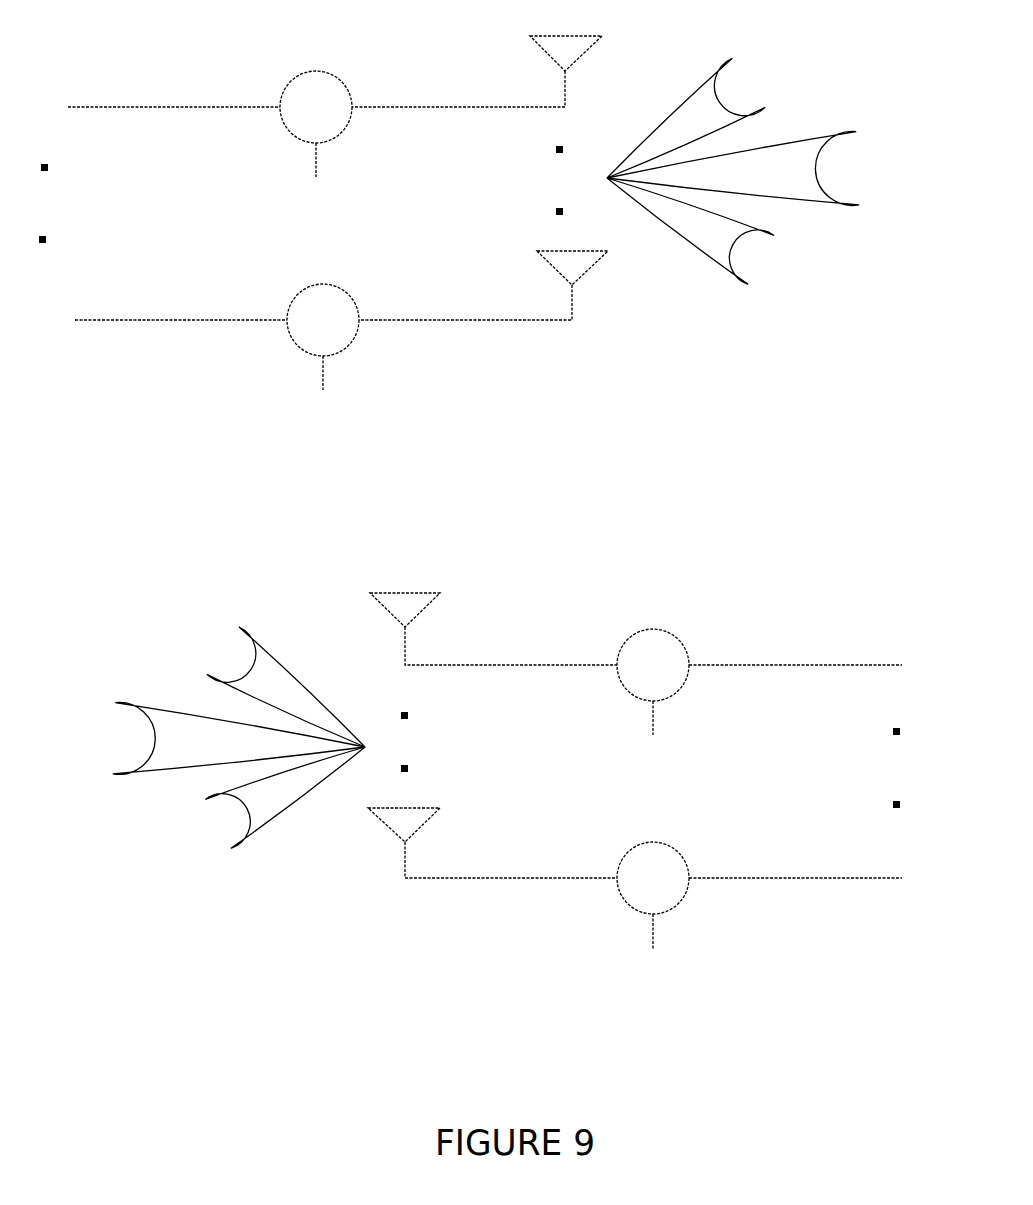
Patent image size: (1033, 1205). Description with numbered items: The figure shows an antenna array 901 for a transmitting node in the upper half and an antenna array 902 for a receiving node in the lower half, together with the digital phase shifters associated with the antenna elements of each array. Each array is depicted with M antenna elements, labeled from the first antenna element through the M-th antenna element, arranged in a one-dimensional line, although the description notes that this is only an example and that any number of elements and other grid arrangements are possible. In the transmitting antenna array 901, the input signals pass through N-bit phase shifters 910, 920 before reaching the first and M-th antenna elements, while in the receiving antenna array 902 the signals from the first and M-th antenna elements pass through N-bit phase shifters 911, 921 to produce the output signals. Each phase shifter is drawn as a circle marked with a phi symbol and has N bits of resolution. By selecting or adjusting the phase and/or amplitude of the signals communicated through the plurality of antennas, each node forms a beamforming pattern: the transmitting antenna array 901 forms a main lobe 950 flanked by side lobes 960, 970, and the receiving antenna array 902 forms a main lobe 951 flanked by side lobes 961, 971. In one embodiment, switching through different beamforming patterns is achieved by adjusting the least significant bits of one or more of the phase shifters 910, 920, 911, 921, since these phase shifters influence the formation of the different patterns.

The antenna array 901 is at (343, 178).
The antenna array 902 is at (623, 735).
The phase shifter 910 is at (191, 110).
The phase shifter 920 is at (196, 324).
The phase shifter 911 is at (734, 669).
The phase shifter 921 is at (738, 881).
The main lobe 950 is at (738, 168).
The main lobe 951 is at (232, 738).
The side lobe 960 is at (729, 102).
The side lobe 961 is at (269, 656).
The side lobe 970 is at (744, 254).
The side lobe 971 is at (274, 832).